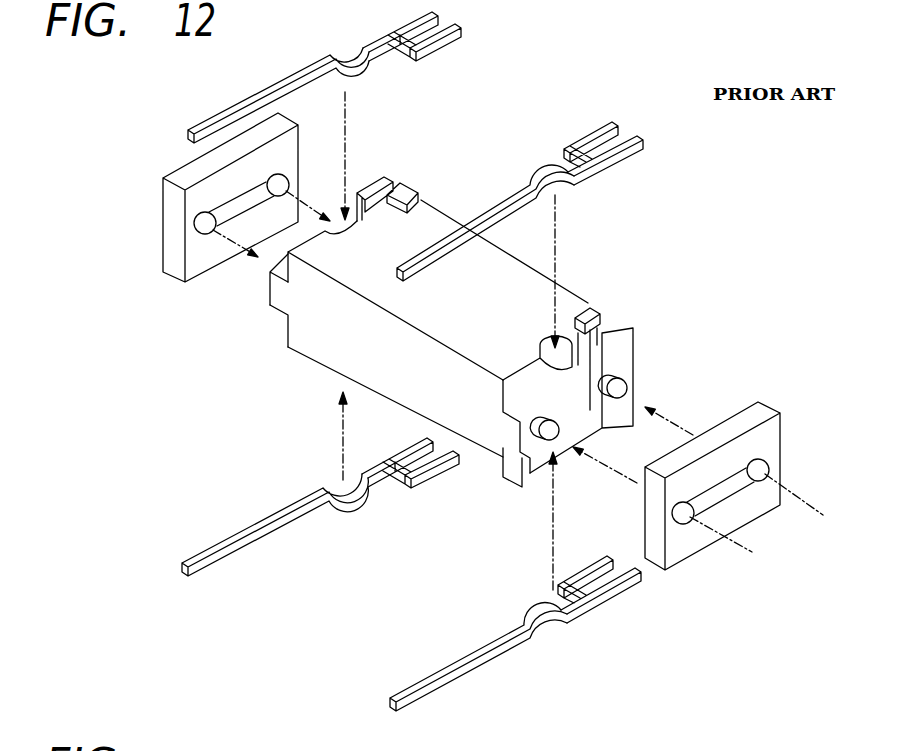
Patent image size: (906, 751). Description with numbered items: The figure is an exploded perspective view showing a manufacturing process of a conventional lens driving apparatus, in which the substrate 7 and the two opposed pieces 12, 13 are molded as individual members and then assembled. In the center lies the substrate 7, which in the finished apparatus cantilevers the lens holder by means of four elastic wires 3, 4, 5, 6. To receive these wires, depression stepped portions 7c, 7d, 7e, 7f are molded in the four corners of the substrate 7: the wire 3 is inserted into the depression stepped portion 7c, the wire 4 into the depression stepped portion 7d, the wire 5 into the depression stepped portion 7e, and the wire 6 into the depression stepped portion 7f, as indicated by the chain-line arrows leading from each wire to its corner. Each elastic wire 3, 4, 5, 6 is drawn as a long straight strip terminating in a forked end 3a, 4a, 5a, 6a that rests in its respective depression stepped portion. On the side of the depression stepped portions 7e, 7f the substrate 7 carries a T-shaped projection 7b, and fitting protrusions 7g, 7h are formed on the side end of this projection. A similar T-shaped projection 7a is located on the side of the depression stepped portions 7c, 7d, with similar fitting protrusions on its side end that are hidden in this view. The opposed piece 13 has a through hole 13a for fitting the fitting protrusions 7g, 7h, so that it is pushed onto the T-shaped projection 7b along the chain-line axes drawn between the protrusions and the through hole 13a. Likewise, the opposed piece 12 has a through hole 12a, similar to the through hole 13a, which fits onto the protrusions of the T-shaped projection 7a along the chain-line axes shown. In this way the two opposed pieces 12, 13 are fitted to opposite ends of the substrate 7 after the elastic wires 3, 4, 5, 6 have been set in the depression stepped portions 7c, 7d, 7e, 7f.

The elastic wire 3 is at (278, 82).
The bifurcated end of first terminal 3a is at (456, 33).
The elastic wire 4 is at (265, 518).
The bifurcated end of second terminal 4a is at (417, 486).
The elastic wire 5 is at (517, 204).
The bifurcated end of third terminal 5a is at (622, 156).
The elastic wire 6 is at (448, 666).
The bifurcated end of fourth terminal 6a is at (617, 588).
The substrate 7 is at (434, 216).
The T-shaped projection 7a is at (268, 293).
The T-shaped projection 7b is at (622, 345).
The depression stepped portion 7c is at (346, 207).
The depression stepped portion 7d is at (287, 333).
The depression stepped portion 7e is at (574, 313).
The depression stepped portion 7f is at (507, 479).
The fitting protrusion 7g is at (627, 389).
The fitting protrusion 7h is at (546, 441).
The opposed piece 12 is at (168, 211).
The through hole 12a is at (262, 192).
The opposed piece 13 is at (781, 440).
The through hole 13a is at (716, 494).